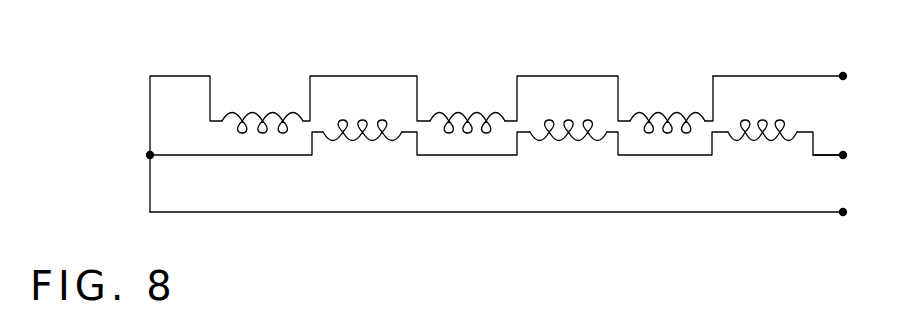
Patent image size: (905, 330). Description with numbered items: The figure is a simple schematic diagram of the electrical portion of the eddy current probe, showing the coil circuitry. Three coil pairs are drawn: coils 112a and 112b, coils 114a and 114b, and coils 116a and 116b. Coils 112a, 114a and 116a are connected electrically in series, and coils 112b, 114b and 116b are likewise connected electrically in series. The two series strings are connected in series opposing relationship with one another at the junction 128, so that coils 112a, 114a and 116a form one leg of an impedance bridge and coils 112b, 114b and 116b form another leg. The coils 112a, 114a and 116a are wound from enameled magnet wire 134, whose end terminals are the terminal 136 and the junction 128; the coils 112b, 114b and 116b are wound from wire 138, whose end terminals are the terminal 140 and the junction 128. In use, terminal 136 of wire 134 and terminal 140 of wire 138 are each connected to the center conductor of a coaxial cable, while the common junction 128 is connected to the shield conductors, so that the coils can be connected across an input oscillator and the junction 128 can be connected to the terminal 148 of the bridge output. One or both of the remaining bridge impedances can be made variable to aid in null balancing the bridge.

The coil 116a is at (250, 112).
The coil 116b is at (342, 143).
The coil 114a is at (458, 111).
The coil 114b is at (548, 143).
The coil 112a is at (657, 111).
The coil 112b is at (742, 143).
The junction 128 is at (150, 158).
The enameled magnet wire 134 is at (748, 74).
The end terminal 136 is at (843, 73).
The wire 138 is at (823, 152).
The end terminal 140 is at (843, 157).
The terminal of the bridge output 148 is at (843, 213).